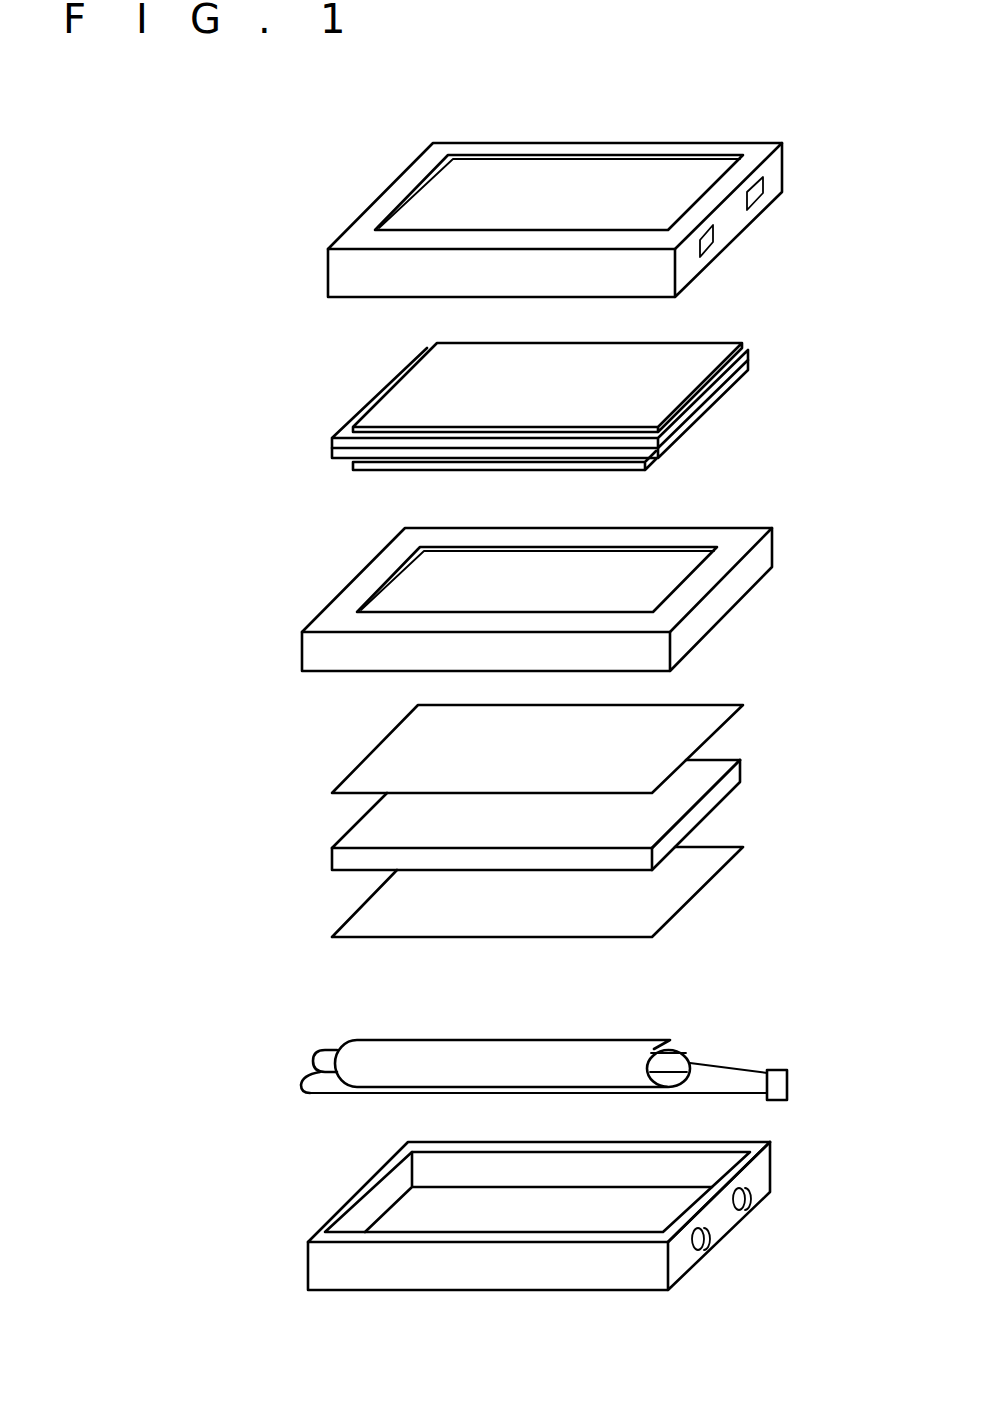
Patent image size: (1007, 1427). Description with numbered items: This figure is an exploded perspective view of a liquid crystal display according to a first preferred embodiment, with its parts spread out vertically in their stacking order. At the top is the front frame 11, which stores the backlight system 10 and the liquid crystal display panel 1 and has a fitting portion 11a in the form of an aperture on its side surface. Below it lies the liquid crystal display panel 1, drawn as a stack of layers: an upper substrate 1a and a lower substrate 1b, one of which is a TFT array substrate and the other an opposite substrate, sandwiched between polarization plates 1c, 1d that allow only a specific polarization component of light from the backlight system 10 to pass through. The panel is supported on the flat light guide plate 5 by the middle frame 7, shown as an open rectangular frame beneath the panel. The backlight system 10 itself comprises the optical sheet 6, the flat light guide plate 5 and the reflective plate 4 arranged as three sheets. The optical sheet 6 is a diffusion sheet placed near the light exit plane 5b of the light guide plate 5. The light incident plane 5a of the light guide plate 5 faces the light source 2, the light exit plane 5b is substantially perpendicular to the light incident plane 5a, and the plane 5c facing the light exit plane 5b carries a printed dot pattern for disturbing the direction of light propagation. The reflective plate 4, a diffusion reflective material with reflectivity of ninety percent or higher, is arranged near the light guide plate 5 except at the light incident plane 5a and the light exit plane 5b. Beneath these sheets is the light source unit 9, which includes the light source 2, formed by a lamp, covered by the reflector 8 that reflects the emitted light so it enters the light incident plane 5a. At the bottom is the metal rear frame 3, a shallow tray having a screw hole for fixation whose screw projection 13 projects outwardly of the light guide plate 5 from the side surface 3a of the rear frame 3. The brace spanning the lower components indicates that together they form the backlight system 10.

The liquid crystal display panel 1 is at (480, 427).
The upper substrate 1a is at (332, 440).
The lower substrate 1b is at (332, 453).
The polarization plate 1c is at (398, 412).
The polarization plate 1d is at (460, 487).
The light source 2 is at (304, 1053).
The rear frame 3 is at (541, 1216).
The side surface 3a is at (762, 1173).
The reflective plate 4 is at (353, 928).
The flat light guide plate 5 is at (518, 796).
The light incident plane 5a is at (342, 860).
The light exit plane 5b is at (717, 767).
The plane 5c is at (728, 798).
The optical sheet 6 is at (355, 782).
The middle frame 7 is at (355, 593).
The reflector 8 is at (363, 1040).
The light source unit 9 is at (494, 1050).
The backlight system 10 is at (168, 527).
The front frame 11 is at (568, 220).
The fitting portion 11a is at (755, 192).
The screw projection 13 is at (710, 1237).